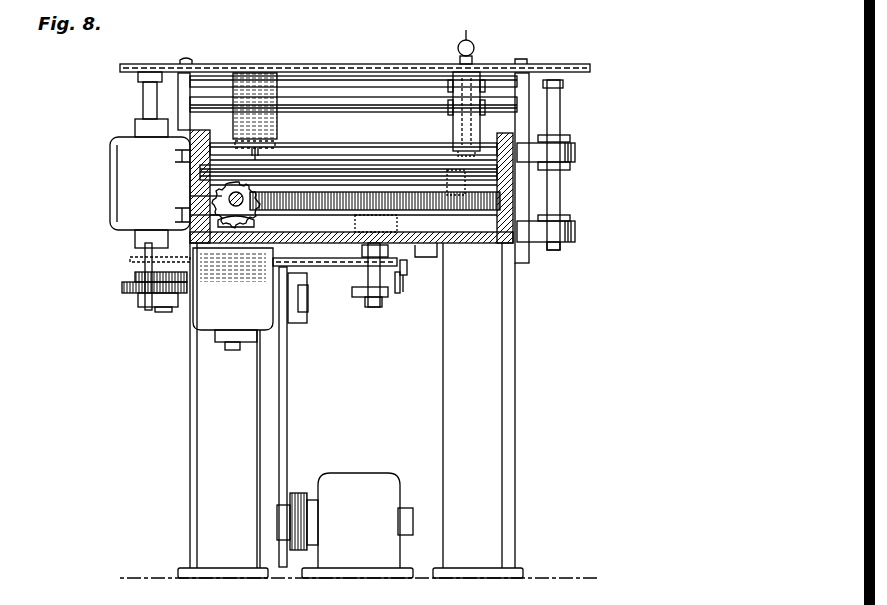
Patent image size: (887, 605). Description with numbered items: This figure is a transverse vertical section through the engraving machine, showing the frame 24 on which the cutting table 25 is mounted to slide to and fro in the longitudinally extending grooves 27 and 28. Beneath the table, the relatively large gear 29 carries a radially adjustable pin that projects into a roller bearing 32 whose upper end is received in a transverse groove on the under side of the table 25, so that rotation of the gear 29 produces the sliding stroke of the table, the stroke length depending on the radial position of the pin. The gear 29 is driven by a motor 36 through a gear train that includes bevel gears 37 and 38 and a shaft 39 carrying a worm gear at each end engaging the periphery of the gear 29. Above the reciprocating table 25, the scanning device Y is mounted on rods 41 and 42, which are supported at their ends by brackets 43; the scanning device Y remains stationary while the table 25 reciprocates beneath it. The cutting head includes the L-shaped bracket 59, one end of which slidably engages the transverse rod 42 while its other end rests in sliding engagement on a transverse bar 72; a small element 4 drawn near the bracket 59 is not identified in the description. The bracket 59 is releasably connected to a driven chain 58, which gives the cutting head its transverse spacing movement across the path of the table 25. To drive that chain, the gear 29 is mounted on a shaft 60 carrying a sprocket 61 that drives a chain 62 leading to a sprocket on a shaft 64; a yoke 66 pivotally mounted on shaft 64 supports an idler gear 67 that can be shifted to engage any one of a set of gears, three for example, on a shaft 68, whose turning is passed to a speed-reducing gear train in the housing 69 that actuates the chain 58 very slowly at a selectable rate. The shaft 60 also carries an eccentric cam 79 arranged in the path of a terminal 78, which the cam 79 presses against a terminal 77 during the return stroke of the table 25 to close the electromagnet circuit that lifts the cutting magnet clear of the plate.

The pin 4 is at (250, 153).
The frame 24 is at (513, 353).
The cutting table 25 is at (300, 166).
The longitudinally extending groove 27 is at (512, 176).
The longitudinally extending groove 28 is at (203, 167).
The gear 29 is at (338, 197).
The roller bearing 32 is at (447, 192).
The motor 36 is at (358, 490).
The bevel gear 37 is at (182, 216).
The bevel gear 38 is at (190, 196).
The shaft 39 is at (252, 206).
The rod 41 is at (358, 104).
The rod 42 is at (415, 78).
The bracket 43 is at (187, 59).
The driven chain 58 is at (305, 70).
The bracket 59 is at (248, 90).
The shaft 60 is at (368, 272).
The sprocket 61 is at (362, 251).
The chain 62 is at (304, 267).
The shaft 64 is at (162, 313).
The yoke 66 is at (178, 283).
The idler gear 67 is at (185, 276).
The shaft 68 is at (138, 266).
The housing 69 is at (126, 165).
The transverse bar 72 is at (394, 148).
The terminal 77 is at (404, 287).
The terminal 78 is at (402, 293).
The eccentric cam 79 is at (360, 298).
The scanning device Y is at (461, 40).